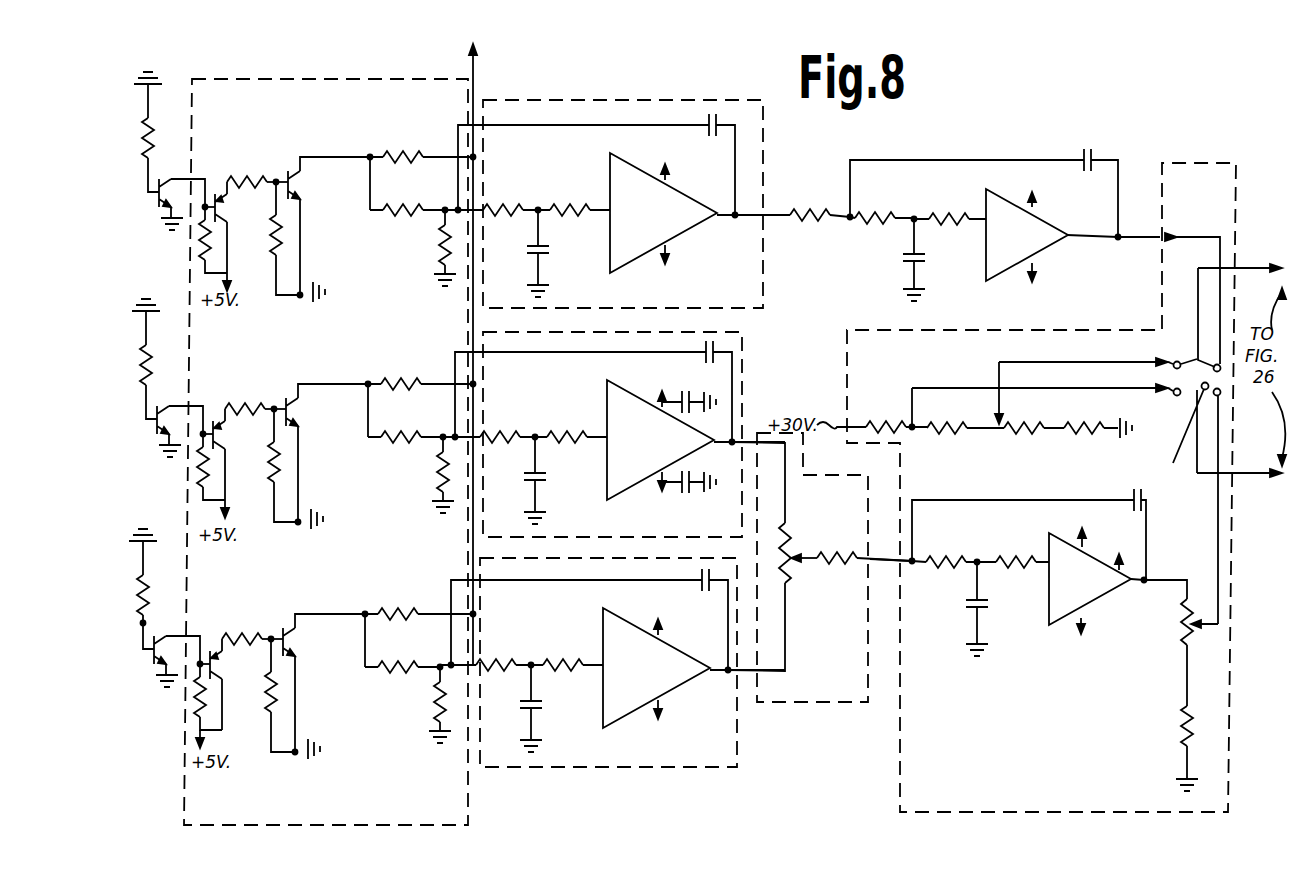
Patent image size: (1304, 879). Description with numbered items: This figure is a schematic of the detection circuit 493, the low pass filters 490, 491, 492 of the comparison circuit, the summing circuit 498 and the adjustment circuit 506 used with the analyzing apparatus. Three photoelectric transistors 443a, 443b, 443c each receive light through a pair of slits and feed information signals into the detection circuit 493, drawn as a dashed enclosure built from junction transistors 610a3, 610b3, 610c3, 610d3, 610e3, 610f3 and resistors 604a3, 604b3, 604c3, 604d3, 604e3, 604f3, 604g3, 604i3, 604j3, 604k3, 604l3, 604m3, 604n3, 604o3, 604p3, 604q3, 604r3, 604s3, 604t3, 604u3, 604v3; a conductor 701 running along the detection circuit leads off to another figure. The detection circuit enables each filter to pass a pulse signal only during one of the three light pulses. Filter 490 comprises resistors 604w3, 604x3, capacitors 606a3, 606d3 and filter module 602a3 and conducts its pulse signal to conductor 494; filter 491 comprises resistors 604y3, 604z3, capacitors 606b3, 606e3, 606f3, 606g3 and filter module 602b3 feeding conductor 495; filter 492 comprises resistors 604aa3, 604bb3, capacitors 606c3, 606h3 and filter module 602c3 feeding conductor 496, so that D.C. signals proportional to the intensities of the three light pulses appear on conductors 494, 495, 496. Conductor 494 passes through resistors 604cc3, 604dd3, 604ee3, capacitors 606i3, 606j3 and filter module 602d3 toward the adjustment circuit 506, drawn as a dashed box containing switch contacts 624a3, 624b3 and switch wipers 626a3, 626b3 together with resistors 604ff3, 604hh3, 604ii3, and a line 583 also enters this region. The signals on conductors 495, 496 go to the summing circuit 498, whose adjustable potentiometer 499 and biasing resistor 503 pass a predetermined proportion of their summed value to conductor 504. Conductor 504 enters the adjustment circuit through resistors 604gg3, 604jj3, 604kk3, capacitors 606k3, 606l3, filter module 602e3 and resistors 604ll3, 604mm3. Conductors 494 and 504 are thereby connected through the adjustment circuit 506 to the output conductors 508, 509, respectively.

The detection circuit 493 is at (315, 78).
The conductor 701 is at (480, 60).
The low pass filter 490 is at (713, 99).
The low pass filter 491 is at (742, 380).
The low pass filter 492 is at (740, 759).
The resistor 604a3 is at (144, 126).
The photoelectric transistor 443a is at (157, 196).
The resistor 604c3 is at (205, 245).
The junction transistor 610a3 is at (215, 193).
The resistor 604b3 is at (262, 165).
The resistor 604d3 is at (262, 283).
The junction transistor 610d3 is at (288, 168).
The resistor 604n3 is at (415, 135).
The resistor 604o3 is at (425, 193).
The resistor 604p3 is at (446, 247).
The resistor 604e3 is at (103, 359).
The photoelectric transistor 443b is at (126, 430).
The resistor 604g3 is at (150, 467).
The junction transistor 610b3 is at (230, 432).
The resistor 604f3 is at (263, 378).
The resistor 604i3 is at (289, 487).
The junction transistor 610e3 is at (334, 438).
The resistor 604q3 is at (422, 386).
The resistor 604r3 is at (407, 422).
The resistor 604s3 is at (402, 475).
The resistor 604j3 is at (199, 589).
The photoelectric transistor 443c is at (199, 638).
The resistor 604l3 is at (237, 739).
The junction transistor 610c3 is at (243, 684).
The resistor 604k3 is at (246, 627).
The resistor 604m3 is at (311, 718).
The junction transistor 610f3 is at (337, 663).
The resistor 604t3 is at (420, 612).
The resistor 604u3 is at (404, 652).
The resistor 604v3 is at (402, 705).
The resistor 604w3 is at (500, 206).
The resistor 604x3 is at (598, 203).
The capacitor 606a3 is at (562, 246).
The filter 602a3 is at (703, 242).
The capacitor 606d3 is at (706, 138).
The resistor 604y3 is at (499, 423).
The resistor 604z3 is at (562, 404).
The capacitor 606b3 is at (570, 480).
The filter 602b3 is at (667, 460).
The capacitor 606e3 is at (593, 388).
The capacitor 606f3 is at (661, 387).
The capacitor 606g3 is at (669, 499).
The resistor 604aa3 is at (504, 640).
The resistor 604bb3 is at (590, 626).
The capacitor 606c3 is at (565, 708).
The filter 602c3 is at (668, 685).
The capacitor 606h3 is at (589, 615).
The resistor 604cc3 is at (820, 208).
The conductor 494 is at (770, 218).
The resistor 604dd3 is at (874, 215).
The resistor 604ee3 is at (968, 219).
The capacitor 606j3 is at (904, 259).
The filter 602d3 is at (1044, 249).
The capacitor 606i3 is at (1110, 136).
The control signal line 583 is at (1149, 301).
The conductor 508 is at (1278, 257).
The conductor 509 is at (1279, 481).
The adjustment circuit 506 is at (1131, 329).
The switch contact 624a3 is at (1173, 363).
The switch contact 624b3 is at (1172, 396).
The switch wiper 626a3 is at (1197, 377).
The switch wiper 626b3 is at (1171, 438).
The resistor 604ff3 is at (873, 426).
The resistor 604hh3 is at (1000, 433).
The resistor 604ii3 is at (1085, 433).
The adjustable potentiometer 499 is at (790, 541).
The biasing resistor 503 is at (788, 582).
The conductor 495 is at (752, 442).
The conductor 496 is at (745, 677).
The summing circuit 498 is at (826, 703).
The conductor 504 is at (880, 564).
The resistor 604gg3 is at (907, 520).
The resistor 604jj3 is at (937, 557).
The resistor 604kk3 is at (1032, 557).
The filter 602e3 is at (1088, 595).
The capacitor 606l3 is at (1126, 497).
The capacitor 606k3 is at (960, 602).
The resistor 604ll3 is at (1181, 642).
The resistor 604mm3 is at (1179, 730).